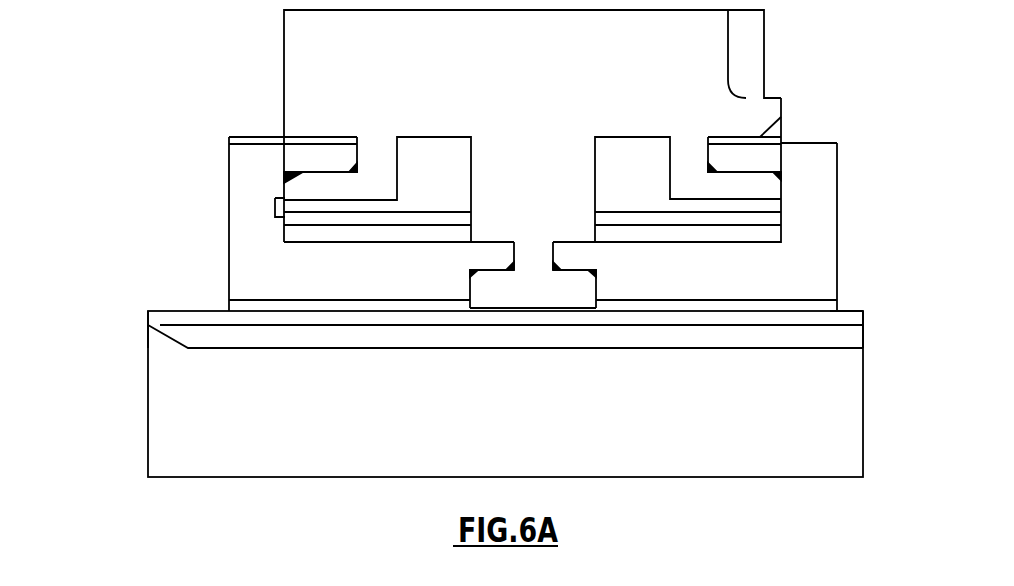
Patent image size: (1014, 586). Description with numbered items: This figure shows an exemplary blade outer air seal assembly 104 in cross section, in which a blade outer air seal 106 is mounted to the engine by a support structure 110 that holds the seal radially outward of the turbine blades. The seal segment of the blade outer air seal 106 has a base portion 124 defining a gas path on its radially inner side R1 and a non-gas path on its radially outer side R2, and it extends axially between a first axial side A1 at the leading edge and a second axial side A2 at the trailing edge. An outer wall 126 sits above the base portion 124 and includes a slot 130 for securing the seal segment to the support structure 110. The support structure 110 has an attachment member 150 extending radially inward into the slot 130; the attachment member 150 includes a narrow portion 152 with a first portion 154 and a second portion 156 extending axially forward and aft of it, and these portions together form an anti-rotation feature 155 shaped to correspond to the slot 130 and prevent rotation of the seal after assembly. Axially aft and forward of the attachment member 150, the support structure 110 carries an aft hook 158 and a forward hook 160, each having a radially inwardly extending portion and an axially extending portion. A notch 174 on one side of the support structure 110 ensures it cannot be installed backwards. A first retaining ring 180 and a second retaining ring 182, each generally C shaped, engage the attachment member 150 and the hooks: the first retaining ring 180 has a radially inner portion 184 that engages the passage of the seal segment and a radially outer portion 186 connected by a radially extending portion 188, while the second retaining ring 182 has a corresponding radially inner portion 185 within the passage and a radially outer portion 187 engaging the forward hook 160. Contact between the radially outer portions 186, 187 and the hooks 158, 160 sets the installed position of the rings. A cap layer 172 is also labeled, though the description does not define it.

The blade outer air seal assembly 104 is at (112, 88).
The blade outer air seal 106 is at (165, 315).
The support structure 110 is at (302, 50).
The base portion 124 is at (205, 324).
The outer wall 126 is at (762, 218).
The slot 130 is at (460, 257).
The attachment member 150 is at (540, 160).
The narrow portion 152 is at (533, 253).
The first portion 154 is at (467, 291).
The anti-rotation feature 155 is at (565, 311).
The second portion 156 is at (600, 291).
The aft hook 158 is at (775, 188).
The forward hook 160 is at (302, 175).
The first cap layer 172 is at (287, 174).
The notch 174 is at (773, 97).
The first retaining ring 180 is at (815, 268).
The second retaining ring 182 is at (240, 167).
The radially inner portion 184 is at (733, 283).
The radially inner portion 185 is at (277, 268).
The radially outer portion 186 is at (758, 160).
The radially outer portion 187 is at (261, 140).
The radially extending portion 188 is at (822, 217).
The first axial side A1 is at (148, 316).
The second axial side A2 is at (863, 325).
The radially inner side R1 is at (838, 348).
The radially outer side R2 is at (850, 310).